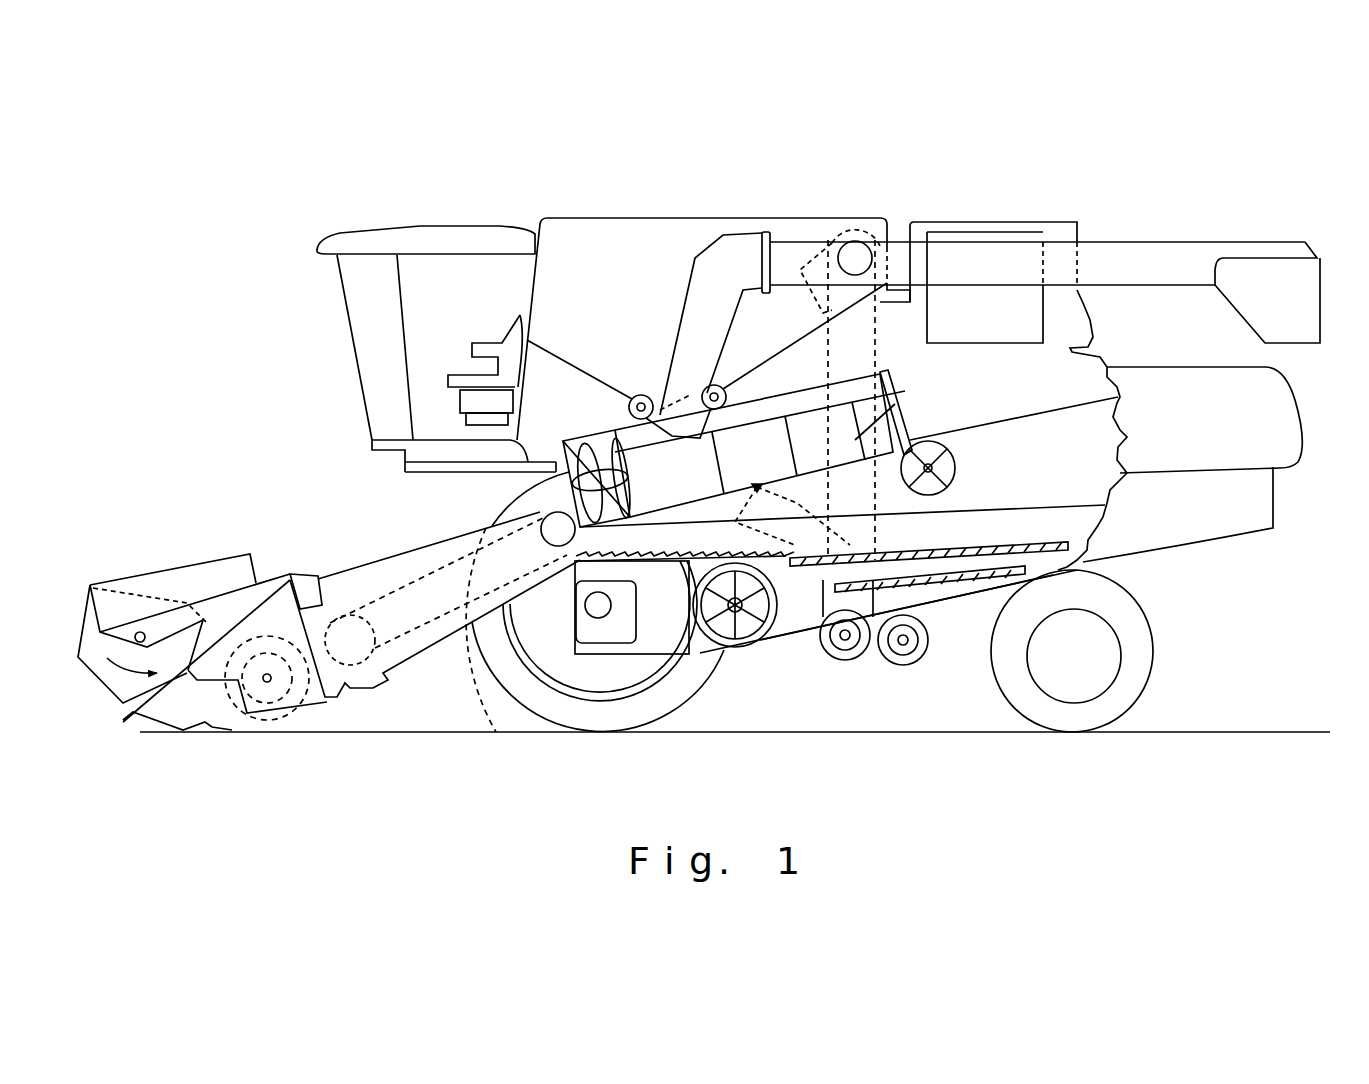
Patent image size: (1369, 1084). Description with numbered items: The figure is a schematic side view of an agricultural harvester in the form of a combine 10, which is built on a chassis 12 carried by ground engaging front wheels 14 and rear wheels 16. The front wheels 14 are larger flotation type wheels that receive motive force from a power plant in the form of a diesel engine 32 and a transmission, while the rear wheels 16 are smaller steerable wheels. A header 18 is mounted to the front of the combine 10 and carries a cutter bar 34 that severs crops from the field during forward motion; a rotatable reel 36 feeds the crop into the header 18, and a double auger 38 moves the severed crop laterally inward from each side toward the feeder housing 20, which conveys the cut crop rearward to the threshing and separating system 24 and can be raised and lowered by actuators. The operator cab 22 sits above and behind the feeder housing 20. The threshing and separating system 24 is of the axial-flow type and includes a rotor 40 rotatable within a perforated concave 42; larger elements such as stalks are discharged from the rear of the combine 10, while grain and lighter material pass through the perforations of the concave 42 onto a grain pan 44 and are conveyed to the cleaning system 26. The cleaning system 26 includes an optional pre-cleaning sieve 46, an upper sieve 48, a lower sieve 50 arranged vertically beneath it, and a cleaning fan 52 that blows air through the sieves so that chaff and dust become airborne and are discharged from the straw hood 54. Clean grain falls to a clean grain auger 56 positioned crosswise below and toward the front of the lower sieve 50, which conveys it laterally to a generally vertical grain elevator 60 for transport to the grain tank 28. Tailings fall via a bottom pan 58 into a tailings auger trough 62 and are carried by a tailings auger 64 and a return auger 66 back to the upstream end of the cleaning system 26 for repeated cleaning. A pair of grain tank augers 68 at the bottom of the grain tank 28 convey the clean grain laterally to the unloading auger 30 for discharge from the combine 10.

The combine 10 is at (418, 210).
The chassis 12 is at (1090, 563).
The front wheels 14 is at (500, 690).
The rear wheels 16 is at (1152, 665).
The header 18 is at (178, 552).
The feeder housing 20 is at (393, 553).
The operator cab 22 is at (352, 332).
The threshing and separating system 24 is at (500, 492).
The cleaning system 26 is at (798, 660).
The grain tank 28 is at (590, 224).
The unloading auger 30 is at (1170, 250).
The diesel engine 32 is at (977, 237).
The cutter bar 34 is at (212, 734).
The rotatable reel 36 is at (88, 625).
The double auger 38 is at (268, 705).
The rotor 40 is at (588, 452).
The perforated concave 42 is at (777, 425).
The grain pan 44 is at (575, 562).
The pre-cleaning sieve 46 is at (883, 553).
The upper sieve 48 is at (984, 553).
The lower sieve 50 is at (955, 580).
The cleaning fan 52 is at (742, 648).
The straw hood 54 is at (1283, 410).
The clean grain auger 56 is at (846, 660).
The bottom pan 58 is at (995, 580).
The grain elevator 60 is at (880, 352).
The tailings auger trough 62 is at (990, 600).
The tailings auger 64 is at (903, 665).
The return auger 66 is at (830, 538).
The grain tank augers 68 is at (640, 395).